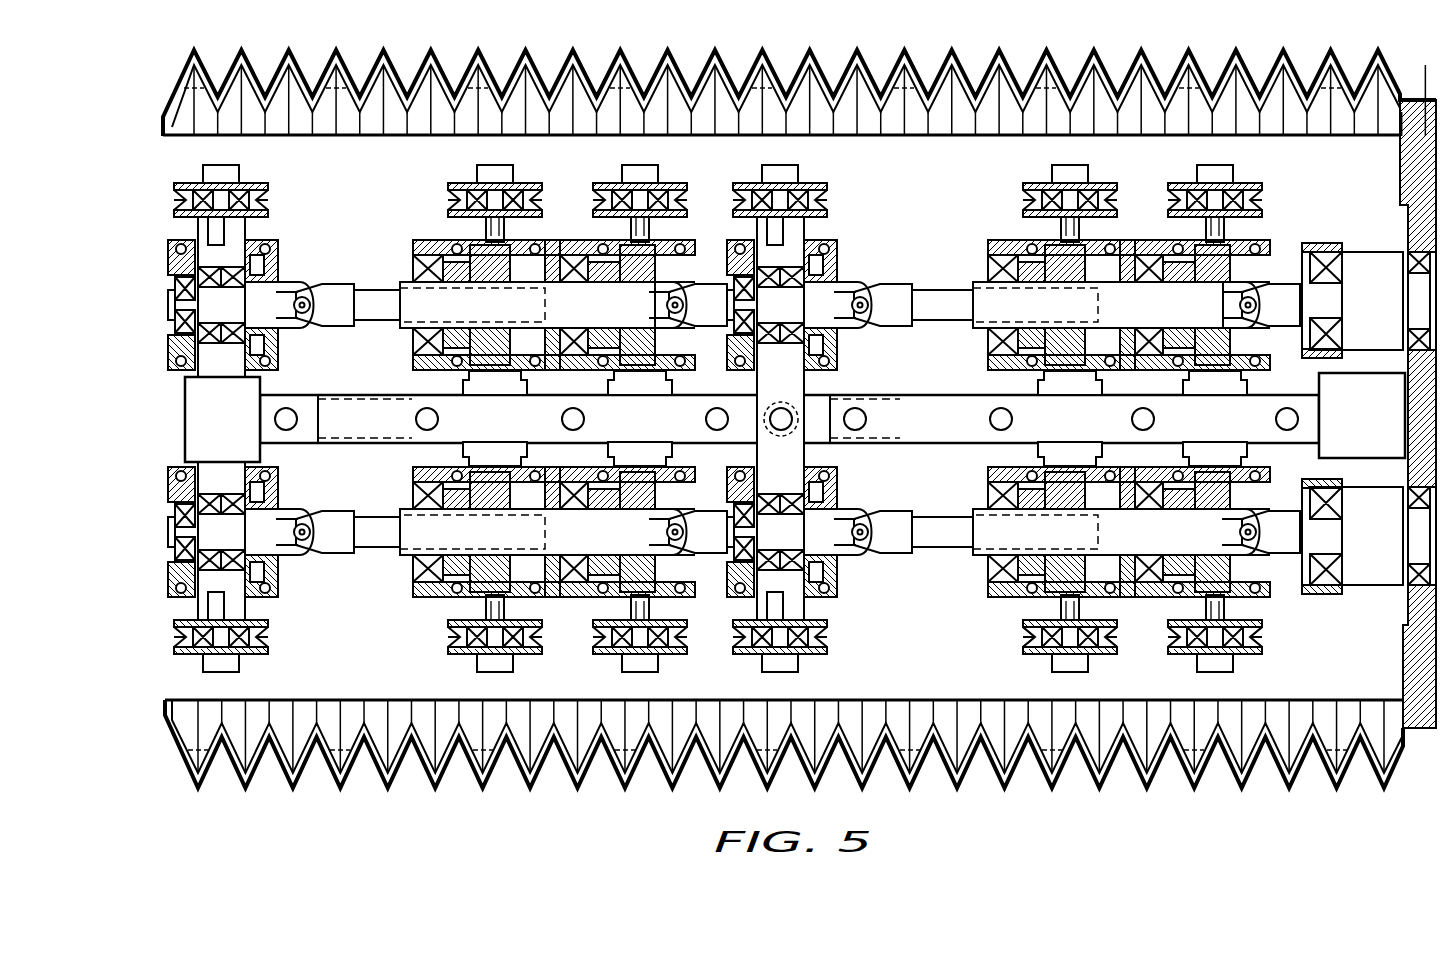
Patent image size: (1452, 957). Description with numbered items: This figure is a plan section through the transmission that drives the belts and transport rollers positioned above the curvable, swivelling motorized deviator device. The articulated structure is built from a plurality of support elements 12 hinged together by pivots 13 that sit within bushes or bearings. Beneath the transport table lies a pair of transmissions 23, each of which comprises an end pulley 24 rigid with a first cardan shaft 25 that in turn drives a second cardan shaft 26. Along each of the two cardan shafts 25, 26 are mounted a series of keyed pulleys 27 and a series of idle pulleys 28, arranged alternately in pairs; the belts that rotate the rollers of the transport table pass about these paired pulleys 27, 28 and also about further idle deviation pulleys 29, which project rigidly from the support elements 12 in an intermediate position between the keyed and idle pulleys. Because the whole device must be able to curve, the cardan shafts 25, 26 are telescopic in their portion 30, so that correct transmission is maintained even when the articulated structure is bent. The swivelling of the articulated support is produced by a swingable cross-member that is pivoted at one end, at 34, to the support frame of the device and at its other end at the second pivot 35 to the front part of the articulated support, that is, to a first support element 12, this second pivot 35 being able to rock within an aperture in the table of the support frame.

The support element 12 is at (905, 391).
The pivot 13 is at (425, 408).
The transmission 23 is at (578, 266).
The end pulley 24 is at (1358, 252).
The first cardan shaft 25 is at (1144, 317).
The second cardan shaft 26 is at (594, 318).
The keyed pulley 27 is at (1250, 598).
The idle pulley 28 is at (1180, 598).
The idle deviation pulley 29 is at (1030, 645).
The telescopic portion 30 is at (967, 285).
The pivot of cross-member to support frame 34 is at (1348, 427).
The second pivot 35 is at (195, 442).